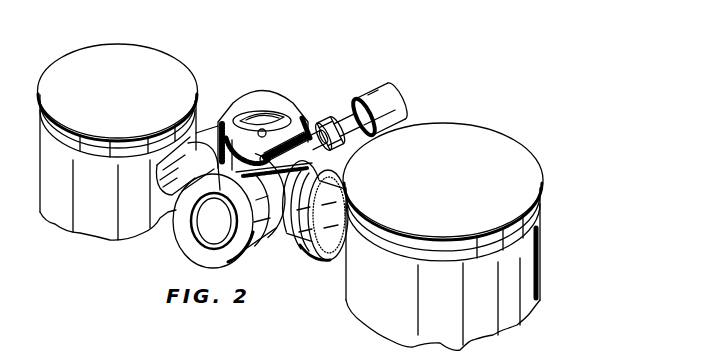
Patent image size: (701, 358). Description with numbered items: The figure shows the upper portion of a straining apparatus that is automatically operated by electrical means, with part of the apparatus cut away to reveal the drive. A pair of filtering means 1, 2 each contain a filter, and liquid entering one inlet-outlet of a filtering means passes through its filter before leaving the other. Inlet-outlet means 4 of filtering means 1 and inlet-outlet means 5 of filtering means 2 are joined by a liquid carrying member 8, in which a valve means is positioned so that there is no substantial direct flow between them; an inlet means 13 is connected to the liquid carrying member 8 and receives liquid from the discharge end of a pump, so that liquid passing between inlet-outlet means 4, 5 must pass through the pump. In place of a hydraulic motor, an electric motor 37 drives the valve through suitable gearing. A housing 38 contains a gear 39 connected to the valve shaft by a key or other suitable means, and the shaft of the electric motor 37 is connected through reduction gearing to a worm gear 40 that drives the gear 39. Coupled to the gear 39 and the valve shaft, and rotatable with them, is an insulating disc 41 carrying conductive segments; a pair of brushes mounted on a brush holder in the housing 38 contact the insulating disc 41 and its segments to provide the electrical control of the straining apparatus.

The filtering means 1 is at (458, 140).
The filtering means 2 is at (155, 68).
The inlet-outlet means 4 is at (338, 232).
The inlet-outlet means 5 is at (165, 178).
The liquid carrying member 8 is at (288, 238).
The inlet means 13 is at (187, 235).
The electric motor 37 is at (380, 98).
The housing 38 is at (267, 100).
The gear 39 is at (278, 145).
The worm gear 40 is at (264, 164).
The insulating disc 41 is at (262, 118).